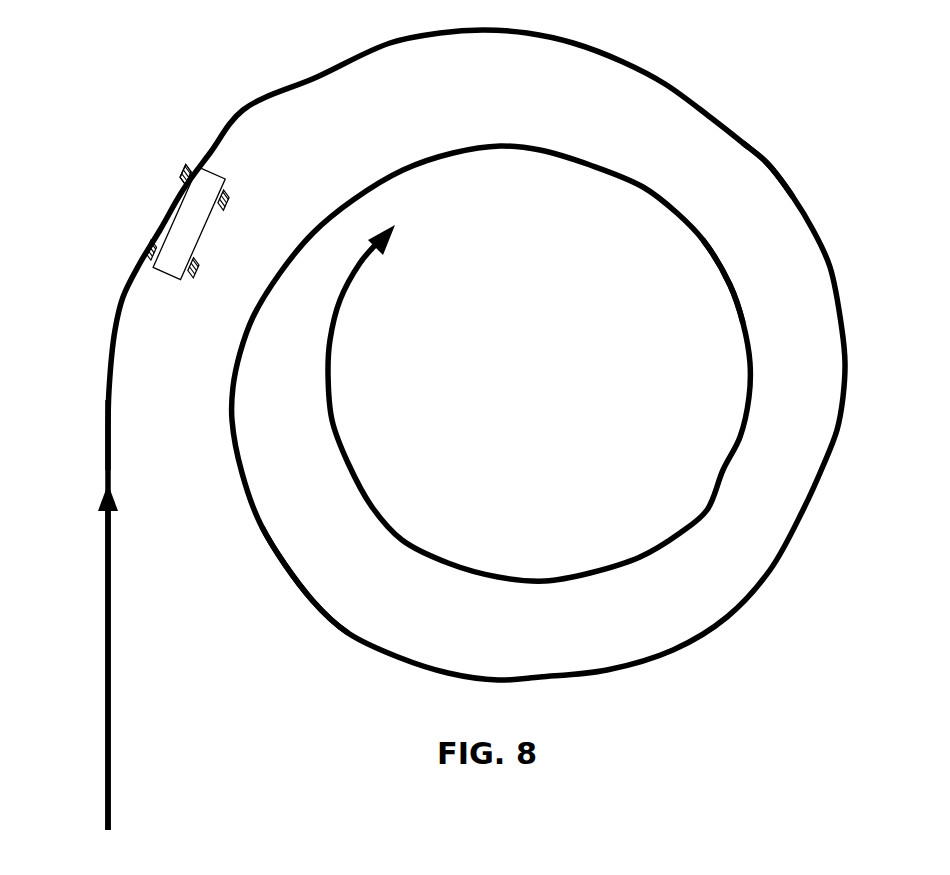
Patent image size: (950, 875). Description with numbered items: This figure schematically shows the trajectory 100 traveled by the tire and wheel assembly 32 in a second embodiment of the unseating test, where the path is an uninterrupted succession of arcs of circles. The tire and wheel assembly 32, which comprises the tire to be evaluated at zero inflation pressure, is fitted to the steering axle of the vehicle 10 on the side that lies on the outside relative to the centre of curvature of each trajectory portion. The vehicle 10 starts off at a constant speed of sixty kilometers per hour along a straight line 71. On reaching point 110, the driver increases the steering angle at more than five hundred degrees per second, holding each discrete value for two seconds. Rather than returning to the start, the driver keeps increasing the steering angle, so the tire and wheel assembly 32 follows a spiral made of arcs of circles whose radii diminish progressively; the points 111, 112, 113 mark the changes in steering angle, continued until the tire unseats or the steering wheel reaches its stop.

The trajectory 100 is at (243, 110).
The vehicle 10 is at (203, 229).
The tire and wheel assembly 32 is at (165, 165).
The point 110 is at (95, 377).
The straight line 71 is at (105, 575).
The point 111 is at (776, 152).
The point 112 is at (302, 607).
The point 113 is at (750, 286).